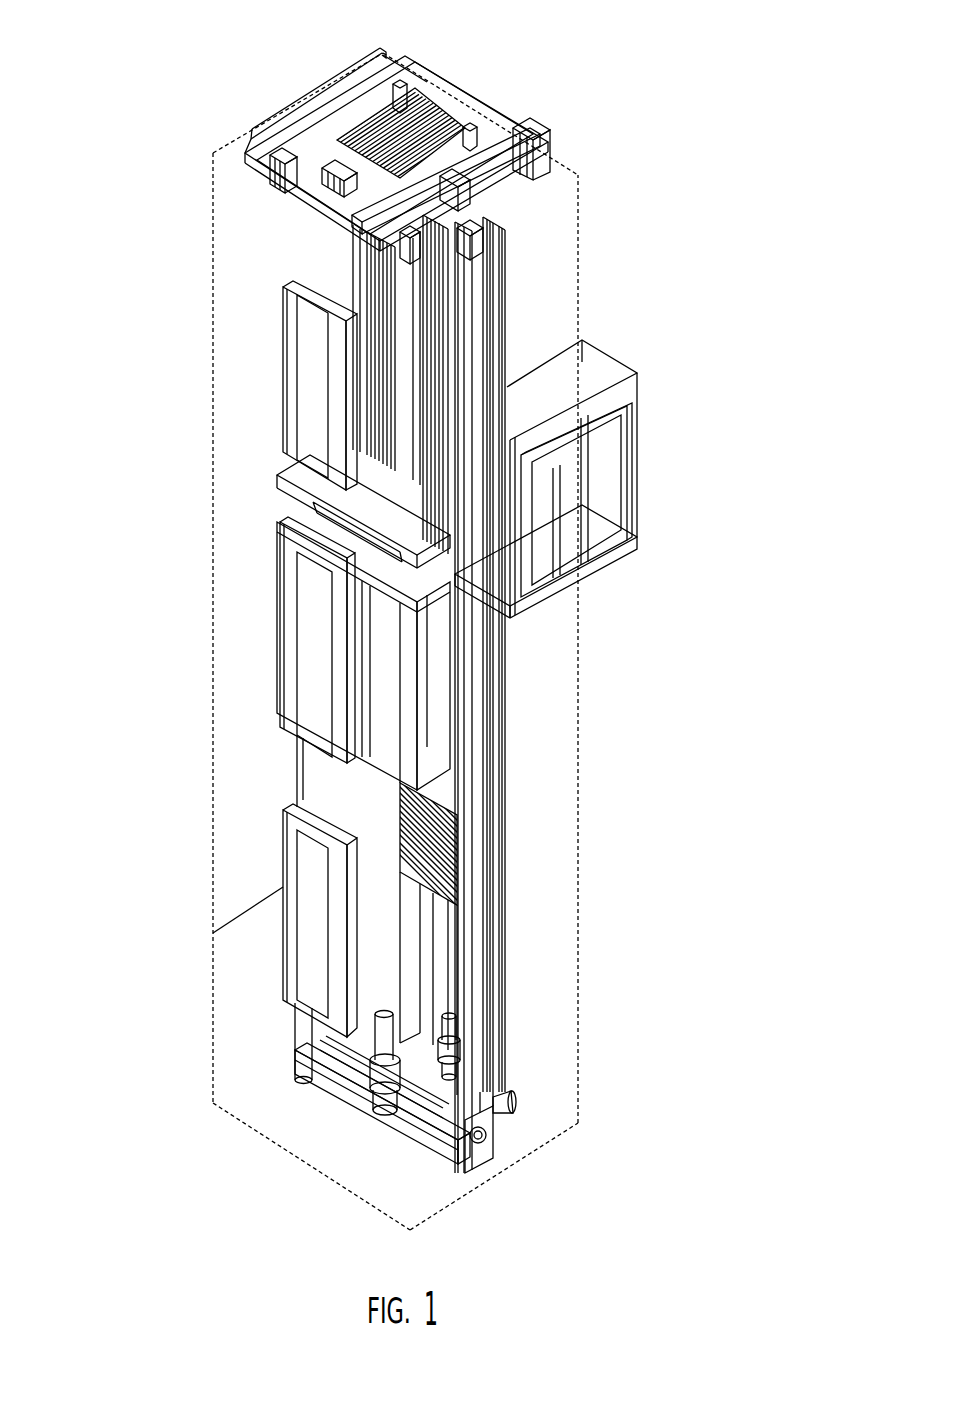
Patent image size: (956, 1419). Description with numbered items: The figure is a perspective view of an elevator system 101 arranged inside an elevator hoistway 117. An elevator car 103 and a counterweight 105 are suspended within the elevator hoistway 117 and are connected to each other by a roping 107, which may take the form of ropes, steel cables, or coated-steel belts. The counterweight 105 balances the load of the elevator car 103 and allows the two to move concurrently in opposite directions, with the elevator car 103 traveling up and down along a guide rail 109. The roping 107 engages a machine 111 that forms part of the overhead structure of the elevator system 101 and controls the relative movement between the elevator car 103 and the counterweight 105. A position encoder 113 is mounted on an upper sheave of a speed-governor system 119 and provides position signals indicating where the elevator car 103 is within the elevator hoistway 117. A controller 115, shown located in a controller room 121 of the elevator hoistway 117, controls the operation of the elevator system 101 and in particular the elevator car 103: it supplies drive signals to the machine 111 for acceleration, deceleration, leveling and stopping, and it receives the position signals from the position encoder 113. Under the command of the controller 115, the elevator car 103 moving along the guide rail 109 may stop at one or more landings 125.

The elevator system 101 is at (605, 108).
The elevator car 103 is at (400, 688).
The counterweight 105 is at (432, 868).
The roping 107 is at (410, 388).
The guide rail 109 is at (440, 790).
The machine 111 is at (302, 146).
The position encoder 113 is at (507, 228).
The controller 115 is at (590, 490).
The elevator hoistway 117 is at (257, 781).
The speed-governor system 119 is at (505, 268).
The controller room 121 is at (645, 372).
The landings 125 is at (283, 373).